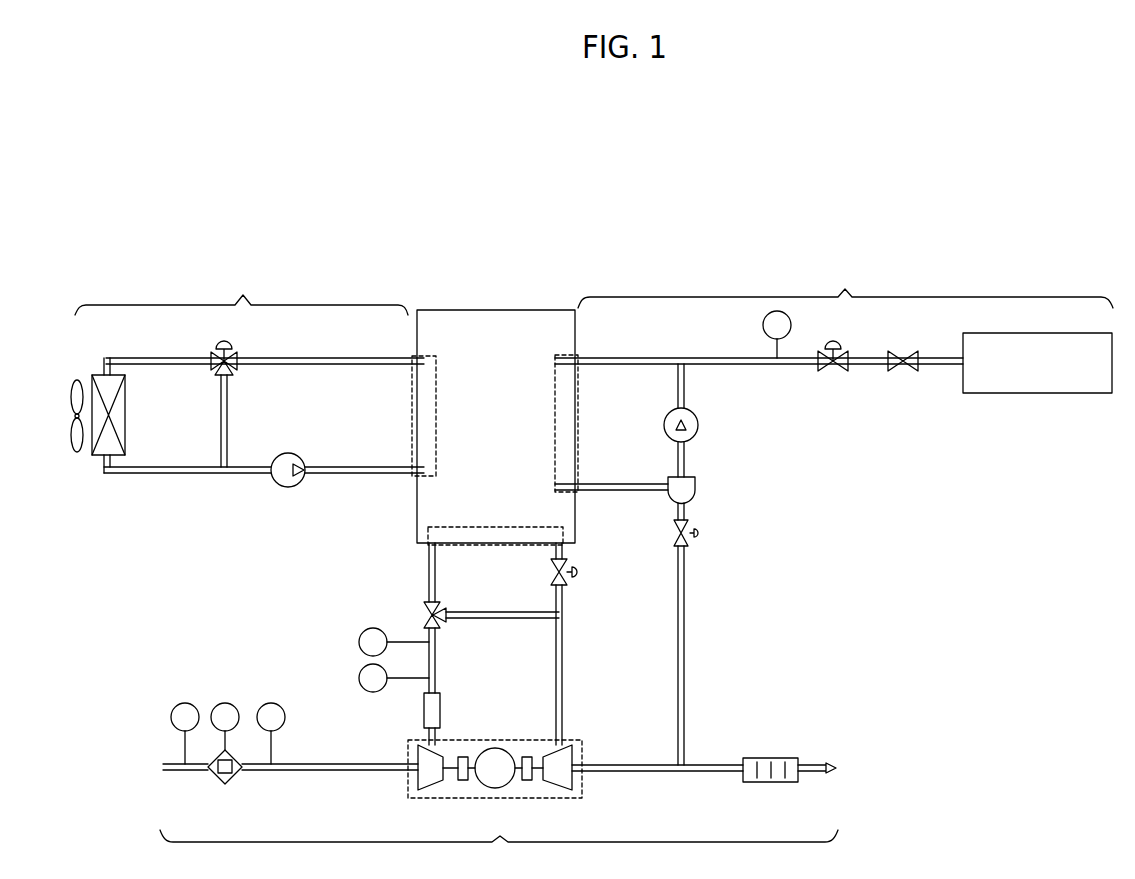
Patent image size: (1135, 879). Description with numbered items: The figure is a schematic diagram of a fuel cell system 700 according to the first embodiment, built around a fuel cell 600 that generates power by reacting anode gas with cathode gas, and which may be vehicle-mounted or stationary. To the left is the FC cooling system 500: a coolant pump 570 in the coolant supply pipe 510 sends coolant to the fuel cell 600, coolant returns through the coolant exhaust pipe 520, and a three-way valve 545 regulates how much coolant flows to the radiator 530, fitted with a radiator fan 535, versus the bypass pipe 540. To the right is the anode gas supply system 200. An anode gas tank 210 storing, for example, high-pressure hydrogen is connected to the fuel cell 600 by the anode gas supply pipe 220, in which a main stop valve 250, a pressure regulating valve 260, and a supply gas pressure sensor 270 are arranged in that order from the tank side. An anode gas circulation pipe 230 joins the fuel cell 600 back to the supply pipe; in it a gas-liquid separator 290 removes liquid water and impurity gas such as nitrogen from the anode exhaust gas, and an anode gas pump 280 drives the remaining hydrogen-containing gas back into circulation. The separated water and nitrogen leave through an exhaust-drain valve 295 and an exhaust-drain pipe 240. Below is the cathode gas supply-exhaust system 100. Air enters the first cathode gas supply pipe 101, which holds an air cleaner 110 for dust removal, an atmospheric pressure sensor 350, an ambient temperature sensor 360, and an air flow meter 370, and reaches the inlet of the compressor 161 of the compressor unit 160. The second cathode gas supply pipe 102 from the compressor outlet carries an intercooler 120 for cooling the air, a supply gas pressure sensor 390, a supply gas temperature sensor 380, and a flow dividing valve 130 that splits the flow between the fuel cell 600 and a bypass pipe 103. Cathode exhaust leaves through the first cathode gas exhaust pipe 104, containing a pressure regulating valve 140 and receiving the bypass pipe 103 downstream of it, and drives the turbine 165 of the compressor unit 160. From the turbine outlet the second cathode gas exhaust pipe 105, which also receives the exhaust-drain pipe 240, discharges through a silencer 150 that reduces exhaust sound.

The cathode gas supply-exhaust system 100 is at (499, 854).
The first cathode gas supply pipe 101 is at (332, 774).
The second cathode gas supply pipe 102 is at (438, 660).
The bypass pipe 103 is at (483, 610).
The first cathode gas exhaust pipe 104 is at (563, 672).
The second cathode gas exhaust pipe 105 is at (645, 775).
The air cleaner 110 is at (208, 770).
The intercooler 120 is at (422, 710).
The flow dividing valve 130 is at (437, 598).
The pressure regulating valve 140 is at (582, 574).
The silencer 150 is at (790, 758).
The compressor unit 160 is at (510, 798).
The compressor 161 is at (433, 785).
The turbine 165 is at (562, 785).
The anode gas supply system 200 is at (845, 281).
The anode gas tank 210 is at (1030, 394).
The anode gas supply pipe 220 is at (708, 356).
The anode gas circulation pipe 230 is at (622, 484).
The exhaust-drain pipe 240 is at (686, 612).
The main stop valve 250 is at (905, 372).
The pressure regulating valve 260 is at (833, 372).
The supply gas pressure sensor 270 is at (792, 325).
The anode gas pump 280 is at (700, 427).
The gas-liquid separator 290 is at (697, 488).
The exhaust-drain valve 295 is at (705, 533).
The atmospheric pressure sensor 350 is at (185, 702).
The ambient temperature sensor 360 is at (224, 702).
The air flow meter 370 is at (271, 702).
The supply gas temperature sensor 380 is at (358, 670).
The supply gas pressure sensor 390 is at (358, 633).
The FC cooling system 500 is at (241, 290).
The coolant supply pipe 510 is at (360, 466).
The coolant exhaust pipe 520 is at (352, 357).
The radiator 530 is at (125, 418).
The radiator fan 535 is at (70, 398).
The bypass pipe 540 is at (232, 375).
The three-way valve 545 is at (232, 350).
The coolant pump 570 is at (290, 453).
The fuel cell 600 is at (487, 310).
The fuel cell system 700 is at (1003, 238).